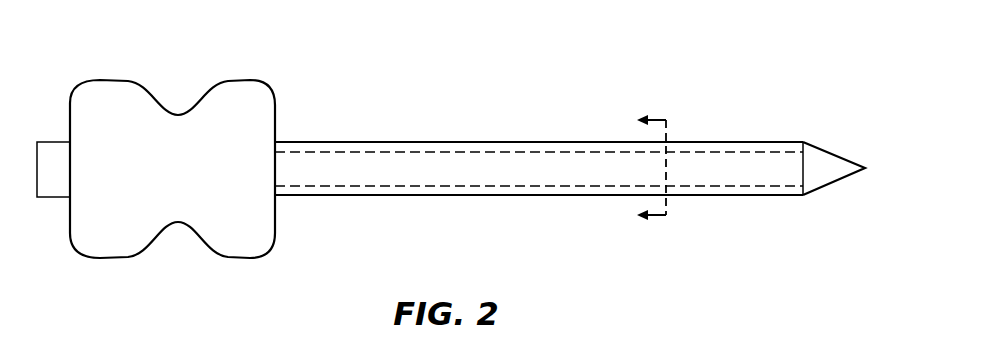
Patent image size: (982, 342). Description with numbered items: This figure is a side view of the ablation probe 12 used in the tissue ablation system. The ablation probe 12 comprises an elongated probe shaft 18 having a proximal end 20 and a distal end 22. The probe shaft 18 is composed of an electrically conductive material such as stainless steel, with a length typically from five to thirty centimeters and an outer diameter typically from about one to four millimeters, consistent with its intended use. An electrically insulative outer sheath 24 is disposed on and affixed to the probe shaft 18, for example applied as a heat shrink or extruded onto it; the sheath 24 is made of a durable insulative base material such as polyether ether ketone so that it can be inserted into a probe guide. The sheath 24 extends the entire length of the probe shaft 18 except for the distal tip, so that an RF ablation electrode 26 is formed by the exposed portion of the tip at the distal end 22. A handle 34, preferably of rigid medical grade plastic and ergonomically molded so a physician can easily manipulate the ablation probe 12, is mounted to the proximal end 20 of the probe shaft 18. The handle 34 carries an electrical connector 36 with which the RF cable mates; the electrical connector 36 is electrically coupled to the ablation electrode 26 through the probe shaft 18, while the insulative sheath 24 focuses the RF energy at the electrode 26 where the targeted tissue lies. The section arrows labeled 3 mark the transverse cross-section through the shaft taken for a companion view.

The ablation probe 12 is at (529, 128).
The probe shaft 18 is at (498, 178).
The proximal end 20 is at (288, 197).
The distal end 22 is at (792, 196).
The outer sheath 24 is at (397, 141).
The RF ablation electrode 26 is at (837, 185).
The handle 34 is at (123, 80).
The electrical connector 36 is at (47, 141).
The section line 3- 3 is at (638, 168).